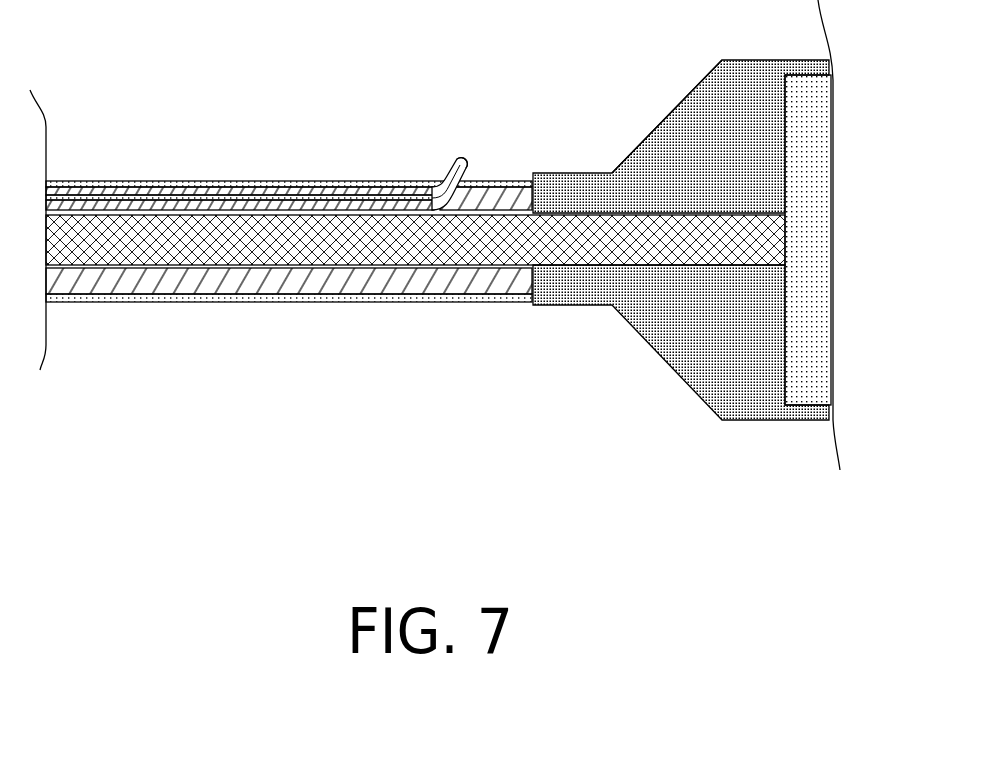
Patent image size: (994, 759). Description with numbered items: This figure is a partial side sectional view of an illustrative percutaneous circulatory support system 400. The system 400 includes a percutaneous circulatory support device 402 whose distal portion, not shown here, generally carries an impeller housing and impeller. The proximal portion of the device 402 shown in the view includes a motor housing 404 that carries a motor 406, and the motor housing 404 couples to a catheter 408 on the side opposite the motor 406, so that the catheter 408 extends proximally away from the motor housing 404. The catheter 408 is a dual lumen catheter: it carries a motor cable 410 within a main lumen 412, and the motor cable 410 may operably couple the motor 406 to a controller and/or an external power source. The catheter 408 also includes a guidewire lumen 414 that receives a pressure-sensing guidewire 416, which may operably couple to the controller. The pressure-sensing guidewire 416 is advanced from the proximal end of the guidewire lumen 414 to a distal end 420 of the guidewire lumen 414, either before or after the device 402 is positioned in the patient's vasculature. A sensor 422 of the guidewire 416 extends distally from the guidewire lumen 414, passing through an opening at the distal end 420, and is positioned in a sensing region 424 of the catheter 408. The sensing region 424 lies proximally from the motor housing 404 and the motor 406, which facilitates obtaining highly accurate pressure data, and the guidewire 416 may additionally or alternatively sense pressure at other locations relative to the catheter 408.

The percutaneous circulatory support system 400 is at (111, 92).
The percutaneous circulatory support device 402 is at (683, 100).
The motor housing 404 is at (643, 140).
The motor 406 is at (793, 77).
The catheter 408 is at (487, 183).
The motor cable 410 is at (249, 263).
The main lumen 412 is at (335, 268).
The guidewire lumen 414 is at (186, 194).
The pressure-sensing guidewire 416 is at (277, 197).
The distal end 420 is at (445, 186).
The sensor 422 is at (458, 163).
The sensing region 424 is at (509, 152).